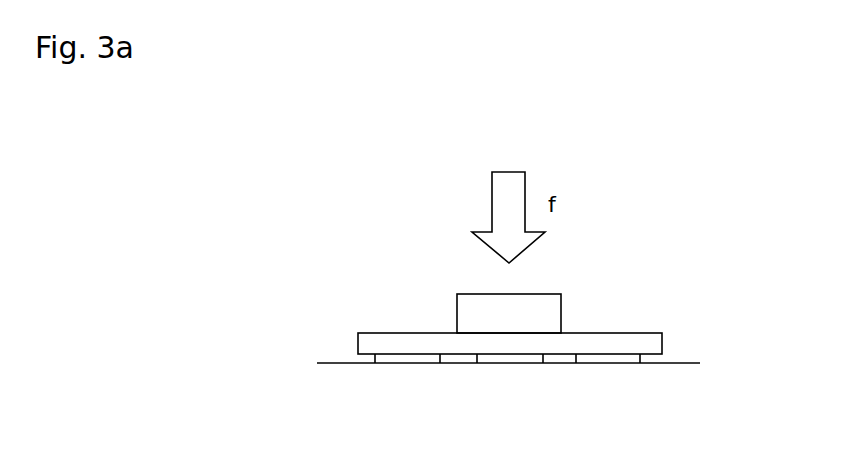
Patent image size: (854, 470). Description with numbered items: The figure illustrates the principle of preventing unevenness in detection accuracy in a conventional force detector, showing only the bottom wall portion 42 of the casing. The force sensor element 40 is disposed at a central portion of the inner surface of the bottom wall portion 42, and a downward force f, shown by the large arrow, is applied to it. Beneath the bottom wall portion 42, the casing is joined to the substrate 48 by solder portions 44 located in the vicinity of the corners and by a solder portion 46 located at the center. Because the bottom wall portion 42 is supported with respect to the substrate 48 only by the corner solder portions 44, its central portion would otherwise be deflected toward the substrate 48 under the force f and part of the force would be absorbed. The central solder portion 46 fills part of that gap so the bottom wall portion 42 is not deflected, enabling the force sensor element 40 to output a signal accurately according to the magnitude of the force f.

The force sensor element 40 is at (462, 305).
The bottom wall portion 42 is at (641, 340).
The solder portions 44 is at (403, 363).
The solder portion 46 is at (507, 363).
The substrate 48 is at (680, 363).